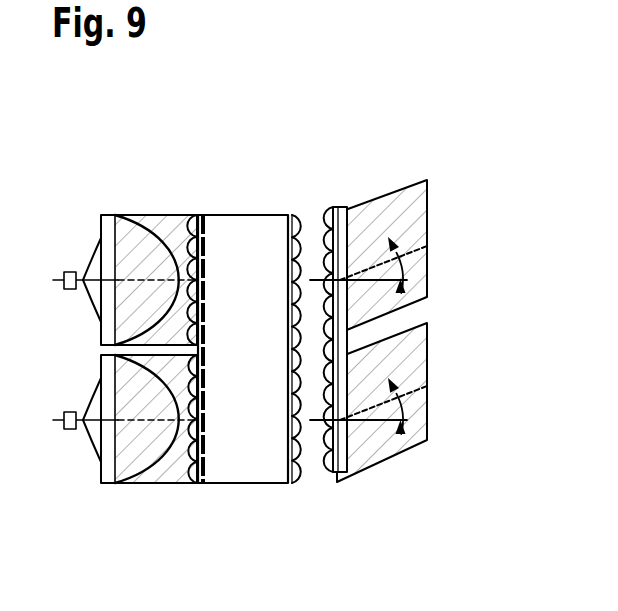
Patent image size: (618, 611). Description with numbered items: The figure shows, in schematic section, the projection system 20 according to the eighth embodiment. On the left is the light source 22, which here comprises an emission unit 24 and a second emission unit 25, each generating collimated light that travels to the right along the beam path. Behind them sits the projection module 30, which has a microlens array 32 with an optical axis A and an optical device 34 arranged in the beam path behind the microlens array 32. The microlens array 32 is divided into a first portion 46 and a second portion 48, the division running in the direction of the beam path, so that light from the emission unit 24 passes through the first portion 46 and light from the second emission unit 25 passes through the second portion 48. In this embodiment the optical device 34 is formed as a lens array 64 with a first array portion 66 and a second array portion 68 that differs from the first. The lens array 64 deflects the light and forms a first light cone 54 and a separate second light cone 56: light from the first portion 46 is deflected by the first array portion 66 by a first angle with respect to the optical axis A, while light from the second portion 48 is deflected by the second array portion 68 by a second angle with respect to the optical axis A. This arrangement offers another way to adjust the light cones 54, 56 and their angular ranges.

The projection system 20 is at (152, 158).
The light source 22 is at (106, 205).
The emission unit 24 is at (77, 230).
The second emission unit 25 is at (82, 462).
The projection module 30 is at (272, 182).
The microlens array 32 is at (226, 203).
The optical device 34 is at (310, 316).
The lens array 64 is at (331, 336).
The first portion 46 is at (264, 275).
The second portion 48 is at (264, 437).
The first light cone 54 is at (363, 208).
The second light cone 56 is at (365, 447).
The first array portion 66 is at (344, 205).
The second array portion 68 is at (335, 474).
The optical axis A is at (314, 422).